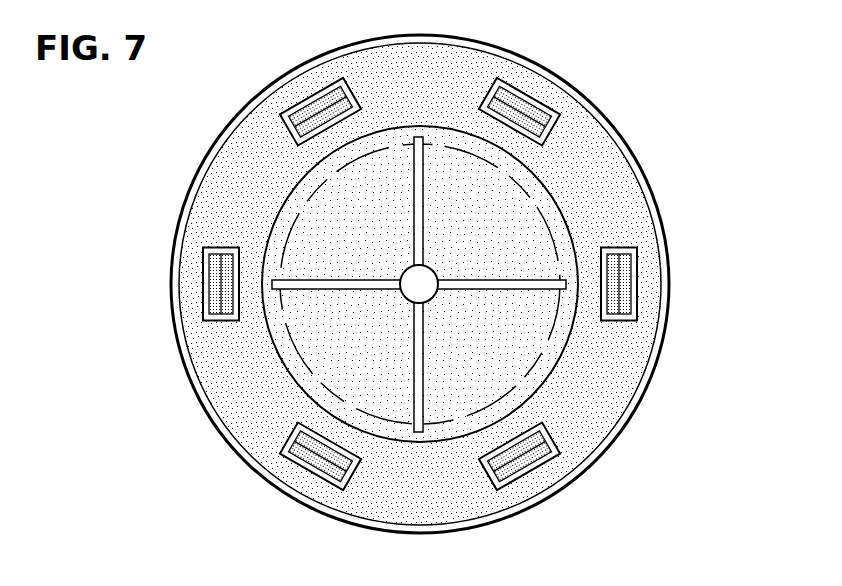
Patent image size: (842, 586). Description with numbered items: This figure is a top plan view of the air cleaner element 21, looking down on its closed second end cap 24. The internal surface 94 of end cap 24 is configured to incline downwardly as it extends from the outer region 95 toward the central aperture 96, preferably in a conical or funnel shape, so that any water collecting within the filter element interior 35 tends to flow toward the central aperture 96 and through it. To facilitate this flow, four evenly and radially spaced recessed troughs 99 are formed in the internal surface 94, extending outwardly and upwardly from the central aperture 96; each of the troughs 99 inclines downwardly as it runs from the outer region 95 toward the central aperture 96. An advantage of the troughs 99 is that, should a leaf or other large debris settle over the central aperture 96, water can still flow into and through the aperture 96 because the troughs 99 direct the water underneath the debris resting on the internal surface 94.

The air cleaner element 21 is at (655, 192).
The second end cap 24 is at (353, 386).
The filter element interior 35 is at (391, 203).
The internal surface 94 is at (382, 267).
The outer region 95 is at (296, 228).
The central aperture 96 is at (426, 275).
The troughs 99 is at (423, 211).